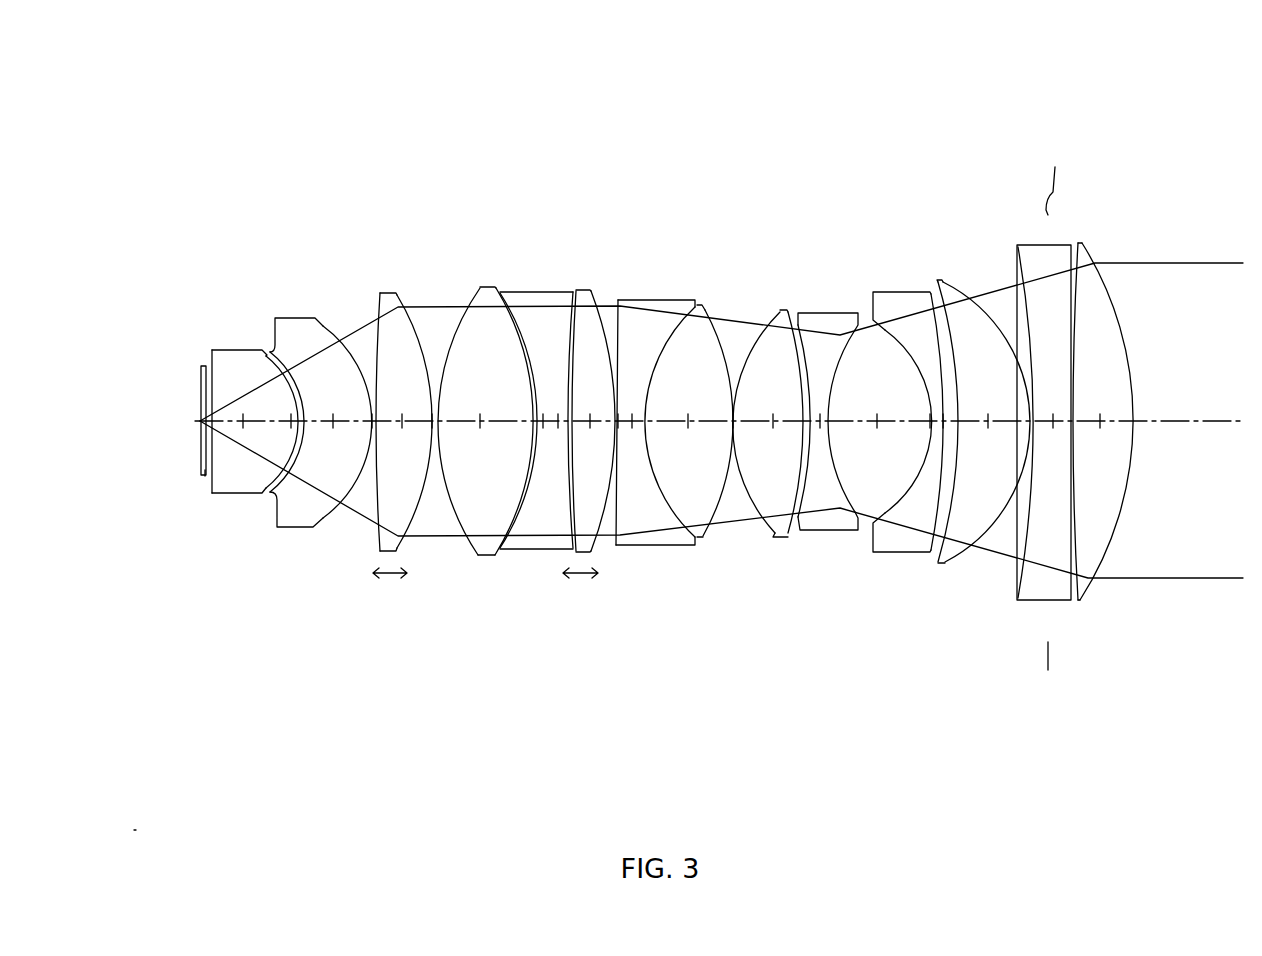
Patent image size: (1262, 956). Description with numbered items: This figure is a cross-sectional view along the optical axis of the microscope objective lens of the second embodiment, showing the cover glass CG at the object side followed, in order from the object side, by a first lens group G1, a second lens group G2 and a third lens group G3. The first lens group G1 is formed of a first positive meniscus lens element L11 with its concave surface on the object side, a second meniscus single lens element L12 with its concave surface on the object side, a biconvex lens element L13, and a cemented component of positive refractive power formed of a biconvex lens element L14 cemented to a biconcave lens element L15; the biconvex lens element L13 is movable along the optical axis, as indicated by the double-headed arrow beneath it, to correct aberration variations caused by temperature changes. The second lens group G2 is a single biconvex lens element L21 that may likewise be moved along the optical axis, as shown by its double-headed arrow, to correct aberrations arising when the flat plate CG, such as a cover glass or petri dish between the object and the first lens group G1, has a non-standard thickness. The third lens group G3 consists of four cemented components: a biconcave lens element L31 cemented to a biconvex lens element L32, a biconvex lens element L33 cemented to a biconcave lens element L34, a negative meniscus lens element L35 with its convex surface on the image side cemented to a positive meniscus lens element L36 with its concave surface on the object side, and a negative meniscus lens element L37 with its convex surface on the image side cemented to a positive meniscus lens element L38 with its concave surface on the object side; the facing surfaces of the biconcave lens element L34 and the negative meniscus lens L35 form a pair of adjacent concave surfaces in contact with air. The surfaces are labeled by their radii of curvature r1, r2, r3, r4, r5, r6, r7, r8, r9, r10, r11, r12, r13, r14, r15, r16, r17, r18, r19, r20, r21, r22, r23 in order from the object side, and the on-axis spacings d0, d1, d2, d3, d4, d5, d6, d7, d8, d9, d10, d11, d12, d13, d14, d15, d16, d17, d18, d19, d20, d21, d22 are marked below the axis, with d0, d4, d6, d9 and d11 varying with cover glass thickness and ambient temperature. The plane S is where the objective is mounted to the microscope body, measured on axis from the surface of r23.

The cover glass CG is at (206, 372).
The first lens group G1 is at (222, 63).
The second lens group G2 is at (635, 63).
The third lens group G3 is at (637, 63).
The first positive meniscus lens element L11 is at (255, 280).
The second meniscus single lens element L12 is at (321, 297).
The biconvex lens element L13 is at (399, 308).
The biconvex lens element L14 is at (484, 311).
The biconcave lens element L15 is at (550, 308).
The biconvex lens element L21 is at (603, 309).
The biconcave lens element L31 is at (659, 305).
The biconvex lens element L32 is at (726, 302).
The biconvex lens element L33 is at (778, 302).
The biconcave lens element L34 is at (842, 298).
The negative meniscus lens element L35 is at (914, 309).
The positive meniscus lens element L36 is at (983, 315).
The negative meniscus lens element L37 is at (1048, 333).
The positive meniscus lens element L38 is at (1106, 333).
The mounting plane S is at (1048, 205).
The radius of curvature of surface 1 r1 is at (215, 350).
The radius of curvature of surface 2 r2 is at (262, 362).
The radius of curvature of surface 3 r3 is at (292, 362).
The radius of curvature of surface 4 r4 is at (350, 340).
The radius of curvature of surface 5 r5 is at (378, 328).
The radius of curvature of surface 6 r6 is at (425, 362).
The radius of curvature of surface 7 r7 is at (458, 325).
The radius of curvature of surface 8 r8 is at (520, 330).
The radius of curvature of surface 9 r9 is at (562, 362).
The radius of curvature of surface 10 r10 is at (572, 362).
The radius of curvature of surface 11 r11 is at (600, 362).
The radius of curvature of surface 12 r12 is at (620, 330).
The radius of curvature of surface 13 r13 is at (667, 362).
The radius of curvature of surface 14 r14 is at (718, 358).
The radius of curvature of surface 15 r15 is at (753, 322).
The radius of curvature of surface 16 r16 is at (825, 355).
The radius of curvature of surface 17 r17 is at (855, 328).
The radius of curvature of surface 18 r18 is at (900, 350).
The radius of curvature of surface 19 r19 is at (922, 345).
The radius of curvature of surface 20 r20 is at (992, 348).
The radius of curvature of surface 21 r21 is at (1012, 298).
The radius of curvature of surface 22 r22 is at (1072, 300).
The radius of curvature of surface 23 r23 is at (1112, 278).
The on-axis spacing d0 is at (205, 470).
The on-axis spacing d1 is at (243, 416).
The on-axis spacing d2 is at (291, 416).
The on-axis spacing d3 is at (333, 416).
The on-axis spacing d4 is at (372, 416).
The on-axis spacing d5 is at (402, 416).
The on-axis spacing d6 is at (432, 416).
The on-axis spacing d7 is at (480, 416).
The on-axis spacing d8 is at (543, 416).
The on-axis spacing d9 is at (558, 416).
The on-axis spacing d10 is at (590, 416).
The on-axis spacing d11 is at (618, 416).
The on-axis spacing d12 is at (632, 416).
The on-axis spacing d13 is at (688, 416).
The on-axis spacing d14 is at (733, 416).
The on-axis spacing d15 is at (773, 416).
The on-axis spacing d16 is at (820, 416).
The on-axis spacing d17 is at (877, 416).
The on-axis spacing d18 is at (930, 416).
The on-axis spacing d19 is at (943, 416).
The on-axis spacing d20 is at (988, 416).
The on-axis spacing d21 is at (1053, 416).
The on-axis spacing d22 is at (1100, 416).